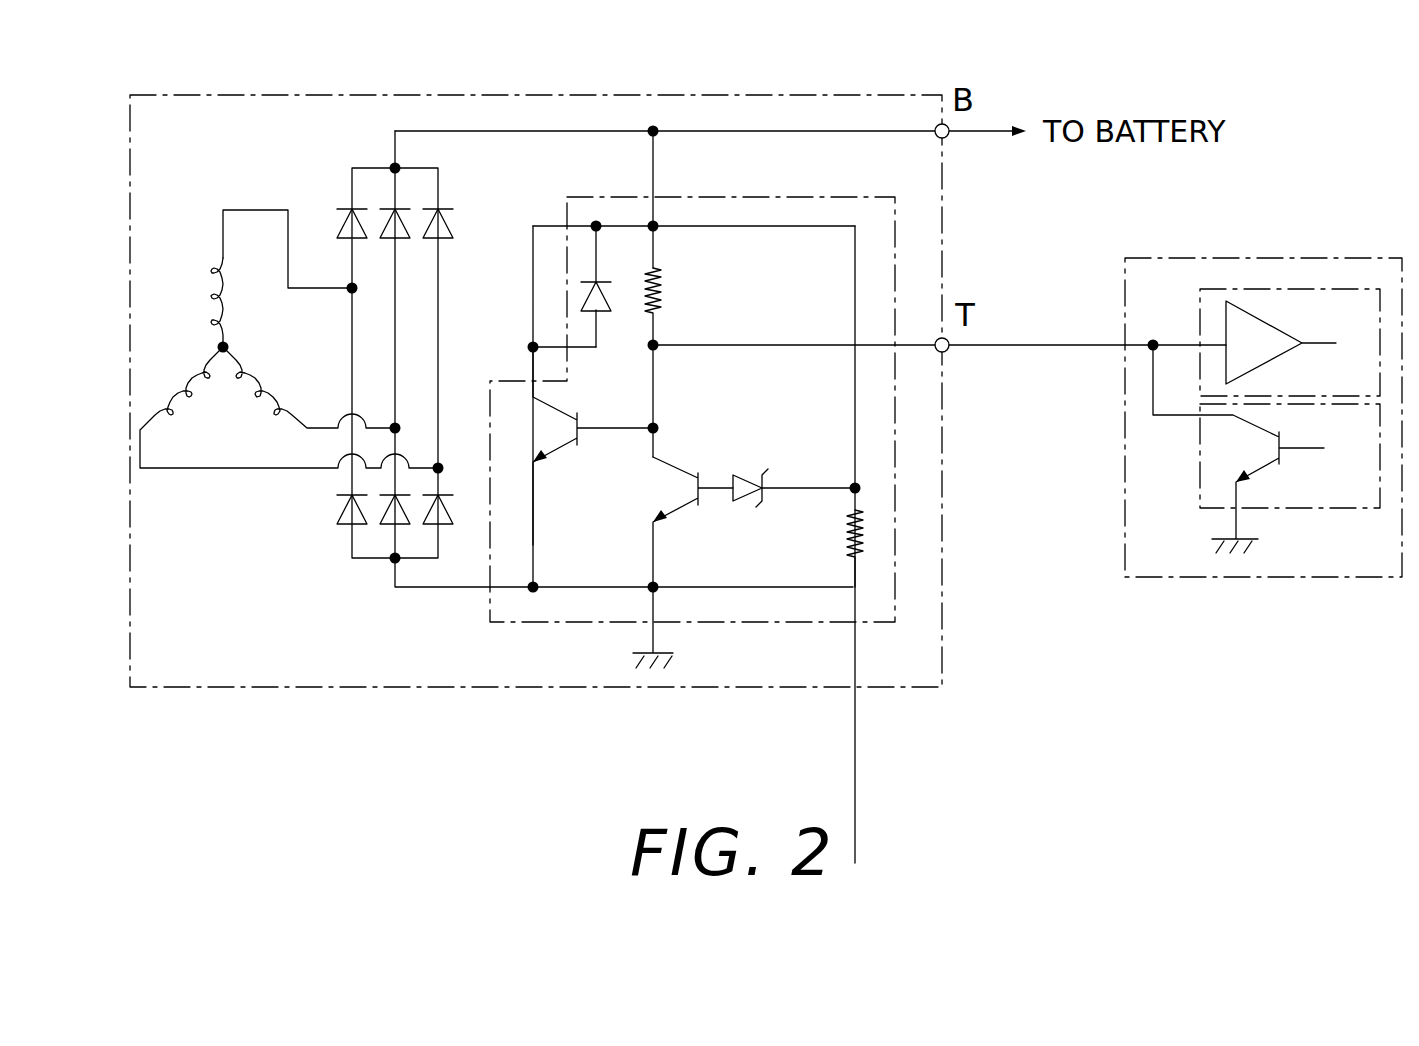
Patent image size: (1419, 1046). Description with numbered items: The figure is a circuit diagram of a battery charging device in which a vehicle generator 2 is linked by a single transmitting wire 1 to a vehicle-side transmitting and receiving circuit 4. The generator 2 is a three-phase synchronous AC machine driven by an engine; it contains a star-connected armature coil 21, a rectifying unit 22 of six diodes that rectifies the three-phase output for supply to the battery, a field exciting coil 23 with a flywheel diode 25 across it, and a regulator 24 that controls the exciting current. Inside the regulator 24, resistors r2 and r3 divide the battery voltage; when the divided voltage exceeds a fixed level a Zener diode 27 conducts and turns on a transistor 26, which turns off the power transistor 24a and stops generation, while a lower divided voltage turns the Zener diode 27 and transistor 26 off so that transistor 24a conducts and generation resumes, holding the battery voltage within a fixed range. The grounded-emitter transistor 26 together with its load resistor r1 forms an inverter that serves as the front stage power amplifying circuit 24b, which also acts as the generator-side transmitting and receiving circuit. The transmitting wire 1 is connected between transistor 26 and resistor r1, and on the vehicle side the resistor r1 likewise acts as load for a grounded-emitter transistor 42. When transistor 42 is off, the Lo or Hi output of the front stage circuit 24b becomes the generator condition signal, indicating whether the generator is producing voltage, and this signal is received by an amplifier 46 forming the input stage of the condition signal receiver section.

The transmitting wire 1 is at (1043, 340).
The generator 2 is at (345, 690).
The vehicle-side transmitting and receiving circuit 4 is at (1275, 580).
The armature coil 21 is at (218, 442).
The rectifying unit 22 is at (368, 271).
The field exciting coil 23 is at (520, 298).
The regulator 24 is at (830, 622).
The transistor 24a is at (563, 440).
The front stage power amplifying circuit 24b is at (675, 243).
The flywheel diode 25 is at (607, 313).
The transistor 26 is at (687, 507).
The Zener diode 27 is at (734, 477).
The load resistor r1 is at (665, 297).
The resistor r2 is at (848, 440).
The resistor r3 is at (848, 547).
The transistor 42 is at (1250, 440).
The amplifier 46 is at (1262, 335).